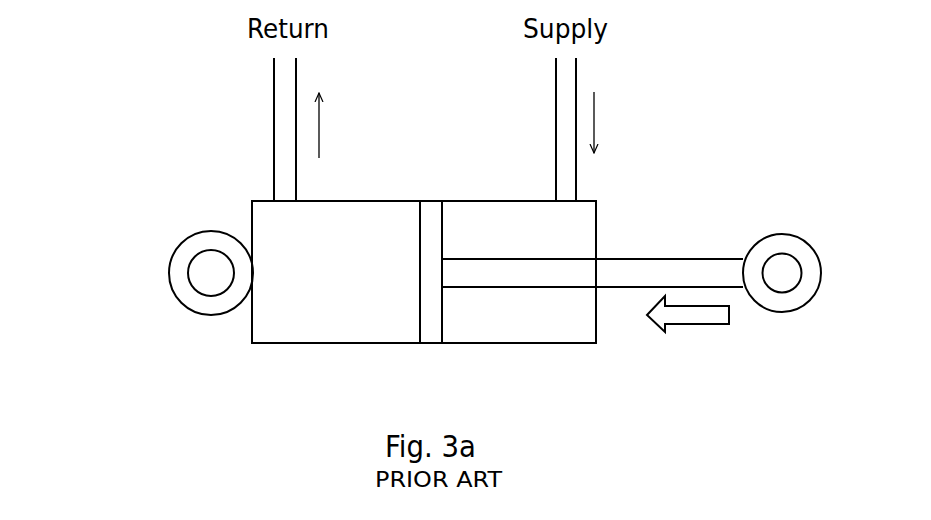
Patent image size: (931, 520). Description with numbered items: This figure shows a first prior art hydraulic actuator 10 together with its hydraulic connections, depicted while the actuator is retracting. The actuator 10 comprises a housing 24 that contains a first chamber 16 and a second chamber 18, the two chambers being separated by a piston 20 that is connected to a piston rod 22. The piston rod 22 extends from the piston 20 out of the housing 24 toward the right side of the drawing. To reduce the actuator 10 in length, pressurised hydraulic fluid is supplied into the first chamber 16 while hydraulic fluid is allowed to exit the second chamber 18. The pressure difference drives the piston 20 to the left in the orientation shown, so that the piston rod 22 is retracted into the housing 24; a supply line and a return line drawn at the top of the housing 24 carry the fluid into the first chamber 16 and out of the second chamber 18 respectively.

The actuator 10 is at (155, 212).
The first chamber 16 is at (528, 242).
The second chamber 18 is at (344, 284).
The piston 20 is at (429, 210).
The piston rod 22 is at (643, 256).
The housing 24 is at (300, 343).